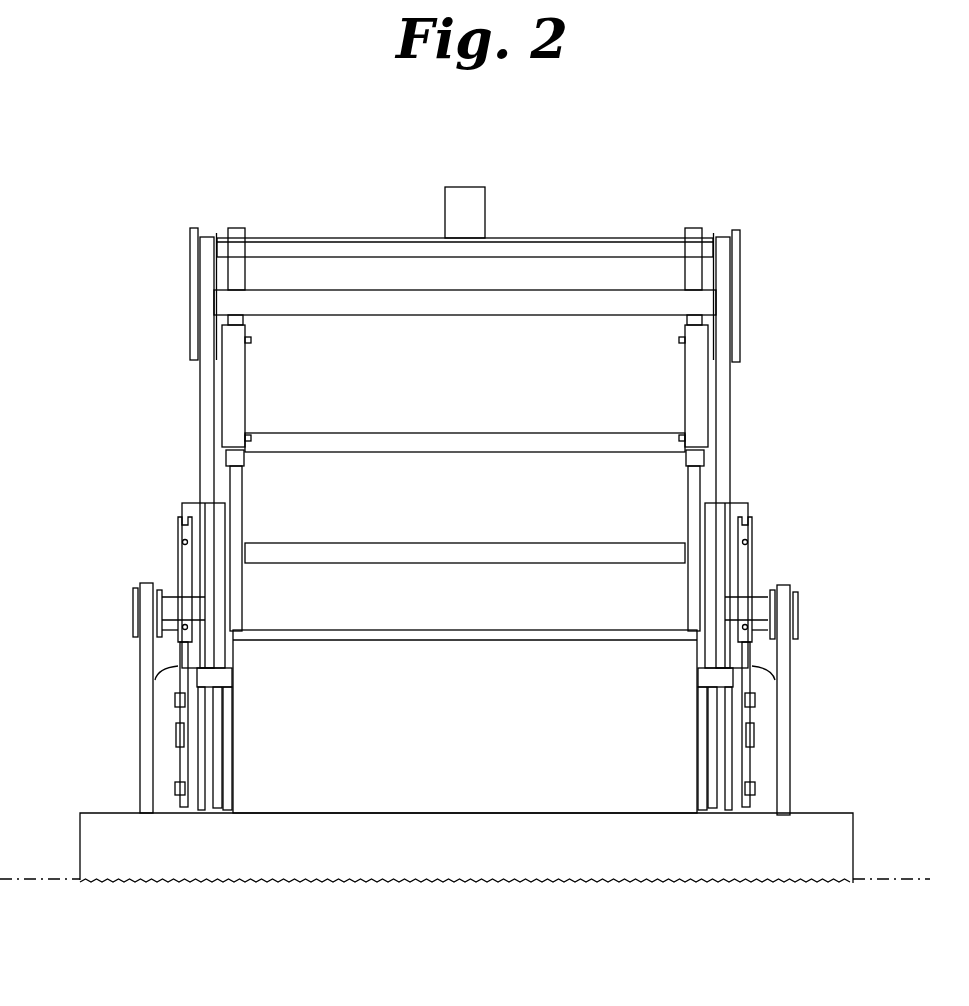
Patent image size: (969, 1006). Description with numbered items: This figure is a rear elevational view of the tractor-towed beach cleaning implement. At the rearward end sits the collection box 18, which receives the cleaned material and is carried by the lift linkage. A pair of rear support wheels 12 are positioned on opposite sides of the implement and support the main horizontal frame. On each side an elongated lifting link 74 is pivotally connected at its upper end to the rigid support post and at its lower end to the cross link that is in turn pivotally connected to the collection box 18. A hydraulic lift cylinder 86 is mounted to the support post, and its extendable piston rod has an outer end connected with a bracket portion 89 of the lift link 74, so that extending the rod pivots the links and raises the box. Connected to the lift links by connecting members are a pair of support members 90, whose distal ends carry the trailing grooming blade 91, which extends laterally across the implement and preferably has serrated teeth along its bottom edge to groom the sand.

The rear support wheel 12 is at (167, 793).
The collection box 18 is at (595, 742).
The lifting link 74 is at (207, 395).
The hydraulic lift cylinder 86 is at (238, 380).
The bracket portion 89 is at (190, 273).
The support member 90 is at (145, 722).
The grooming blade 91 is at (448, 840).